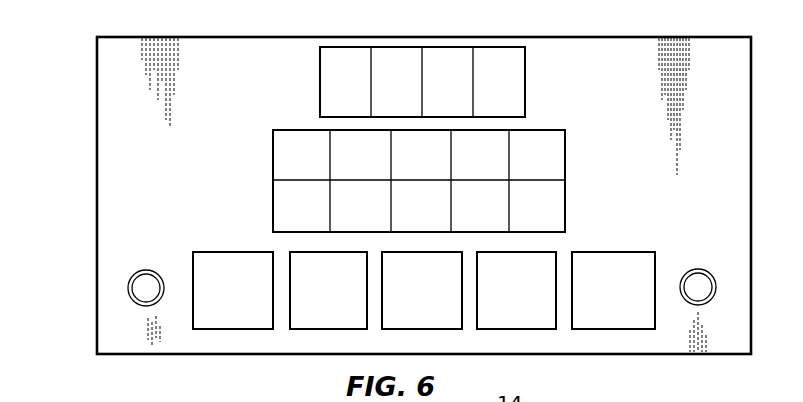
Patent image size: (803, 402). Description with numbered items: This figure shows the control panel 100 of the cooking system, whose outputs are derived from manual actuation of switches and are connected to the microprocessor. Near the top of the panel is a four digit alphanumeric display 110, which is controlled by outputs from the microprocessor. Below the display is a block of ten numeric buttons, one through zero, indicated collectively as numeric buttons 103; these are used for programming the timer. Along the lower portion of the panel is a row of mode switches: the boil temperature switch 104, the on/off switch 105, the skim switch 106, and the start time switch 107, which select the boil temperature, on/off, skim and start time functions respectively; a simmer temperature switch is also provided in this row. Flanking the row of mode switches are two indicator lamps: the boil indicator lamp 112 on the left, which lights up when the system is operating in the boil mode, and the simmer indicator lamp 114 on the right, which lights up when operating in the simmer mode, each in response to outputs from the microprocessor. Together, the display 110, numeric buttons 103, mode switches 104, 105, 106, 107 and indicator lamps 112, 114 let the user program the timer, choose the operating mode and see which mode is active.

The control panel 100 is at (96, 81).
The four digit alphanumeric display 110 is at (319, 80).
The numeric buttons 103 is at (272, 180).
The boil temperature mode switch 104 is at (218, 330).
The on/off mode switch 105 is at (330, 330).
The skim mode switch 106 is at (444, 330).
The start time mode switch 107 is at (538, 330).
The boil indicator lamp 112 is at (147, 270).
The simmer indicator lamp 114 is at (699, 269).